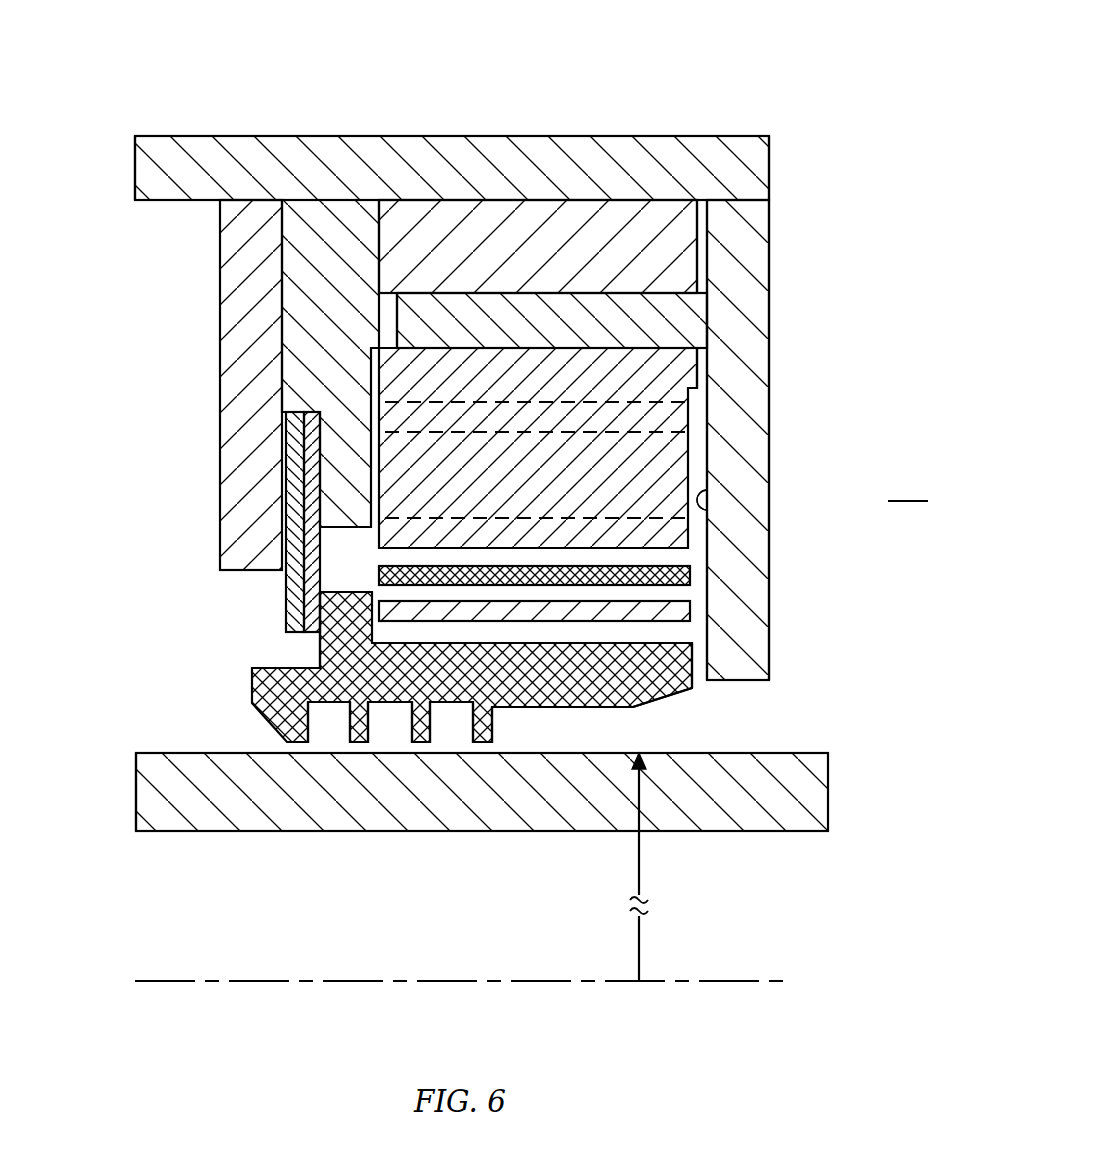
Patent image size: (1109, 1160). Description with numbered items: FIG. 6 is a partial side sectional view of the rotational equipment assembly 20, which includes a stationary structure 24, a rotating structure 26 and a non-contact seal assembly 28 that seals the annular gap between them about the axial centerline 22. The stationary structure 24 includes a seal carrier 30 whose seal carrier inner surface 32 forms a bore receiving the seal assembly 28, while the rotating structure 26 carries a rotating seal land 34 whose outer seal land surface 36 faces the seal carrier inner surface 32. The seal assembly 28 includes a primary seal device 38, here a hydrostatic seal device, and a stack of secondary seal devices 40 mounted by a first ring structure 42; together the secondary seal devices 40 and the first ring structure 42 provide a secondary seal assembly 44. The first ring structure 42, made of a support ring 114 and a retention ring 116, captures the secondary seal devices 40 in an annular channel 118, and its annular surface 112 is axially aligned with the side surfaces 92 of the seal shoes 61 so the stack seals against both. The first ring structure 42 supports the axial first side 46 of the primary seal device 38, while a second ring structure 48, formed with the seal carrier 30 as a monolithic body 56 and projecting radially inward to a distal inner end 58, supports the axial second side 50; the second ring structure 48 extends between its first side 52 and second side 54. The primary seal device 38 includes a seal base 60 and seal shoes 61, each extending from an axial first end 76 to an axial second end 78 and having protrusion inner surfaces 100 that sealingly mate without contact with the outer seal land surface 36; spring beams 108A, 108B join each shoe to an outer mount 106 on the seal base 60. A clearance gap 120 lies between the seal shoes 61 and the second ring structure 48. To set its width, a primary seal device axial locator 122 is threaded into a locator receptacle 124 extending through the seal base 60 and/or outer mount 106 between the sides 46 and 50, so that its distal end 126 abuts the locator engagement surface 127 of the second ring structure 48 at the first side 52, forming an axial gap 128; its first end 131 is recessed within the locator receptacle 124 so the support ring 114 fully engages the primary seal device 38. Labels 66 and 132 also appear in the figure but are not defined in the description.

The rotational equipment assembly 20 is at (786, 74).
The axial centerline 22 is at (783, 983).
The stationary structure 24 is at (174, 134).
The rotating structure 26 is at (166, 833).
The seal assembly 28 is at (225, 416).
The seal carrier 30 is at (124, 165).
The seal carrier inner surface 32 is at (168, 201).
The rotating seal land 34 is at (136, 795).
The outer seal land surface 36 is at (160, 752).
The primary seal device 38 is at (575, 193).
The secondary seal devices 40 is at (237, 522).
The first ring structure 42 is at (219, 298).
The secondary seal assembly 44 is at (450, 693).
The axial first side 46 is at (379, 238).
The second ring structure 48 is at (771, 437).
The axial second side 50 is at (708, 243).
The first side 52 is at (709, 500).
The locator engagement surface 127 is at (702, 500).
The second side 54 is at (770, 470).
The monolithic body 56 is at (771, 166).
The distal inner end 58 is at (760, 680).
The seal base 60 is at (500, 195).
The seal shoe 61 is at (257, 729).
The top plate region 66 is at (416, 190).
The axial first end 76 is at (252, 684).
The axial second end 78 is at (692, 686).
The side surface 92 is at (320, 659).
The protrusion inner surface 100 is at (355, 744).
The outer mount 106 is at (697, 365).
The spring beam 108A is at (538, 448).
The spring beam 108B is at (490, 508).
The annular surface 112 is at (303, 490).
The secondary seal device support ring 114 is at (338, 185).
The retention ring 116 is at (250, 185).
The annular channel 118 is at (282, 443).
The clearance gap 120 is at (700, 638).
The primary seal device axial locator 122 is at (640, 297).
The locator receptacle 124 is at (462, 288).
The distal end 126 is at (708, 320).
The axial gap 128 is at (709, 265).
The locator first end 131 is at (397, 323).
The region 132 is at (908, 486).